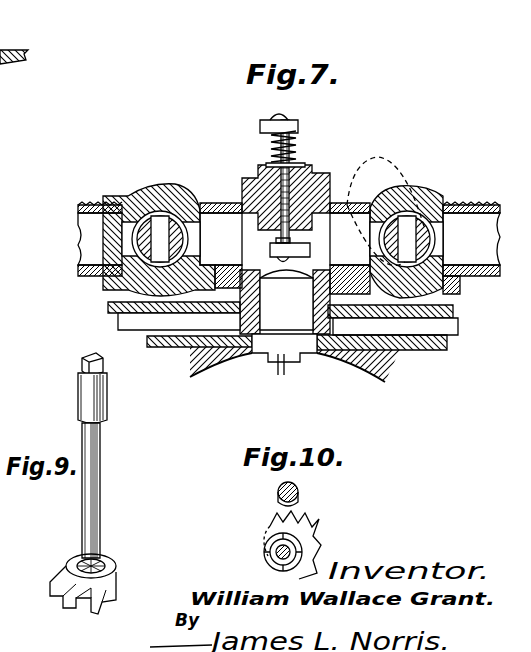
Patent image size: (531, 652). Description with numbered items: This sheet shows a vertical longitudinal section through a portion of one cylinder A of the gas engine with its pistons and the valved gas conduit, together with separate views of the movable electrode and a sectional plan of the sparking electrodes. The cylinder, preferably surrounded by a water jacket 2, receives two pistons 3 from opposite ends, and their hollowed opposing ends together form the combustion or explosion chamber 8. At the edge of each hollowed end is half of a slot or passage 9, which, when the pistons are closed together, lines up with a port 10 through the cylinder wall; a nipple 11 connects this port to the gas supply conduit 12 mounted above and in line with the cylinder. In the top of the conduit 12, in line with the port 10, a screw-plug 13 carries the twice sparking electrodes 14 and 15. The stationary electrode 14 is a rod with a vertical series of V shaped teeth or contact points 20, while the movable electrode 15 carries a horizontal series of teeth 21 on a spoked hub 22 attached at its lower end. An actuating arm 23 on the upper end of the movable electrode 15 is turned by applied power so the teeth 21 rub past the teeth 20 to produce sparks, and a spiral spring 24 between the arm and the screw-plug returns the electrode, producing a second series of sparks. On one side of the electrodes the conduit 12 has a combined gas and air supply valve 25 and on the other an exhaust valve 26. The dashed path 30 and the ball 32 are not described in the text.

In FIG. 7, the water jacket 2 is at (393, 321).
In FIG. 7, the pistons 3 is at (297, 361).
In FIG. 7, the combustion or explosion chamber 8 is at (295, 373).
In FIG. 7, the slot or passage 9 is at (276, 360).
In FIG. 7, the port 10 is at (284, 348).
In FIG. 7, the nipple 11 is at (286, 300).
In FIG. 7, the gas supply conduit 12 is at (289, 248).
In FIG. 7, the screw-plug 13 is at (258, 178).
In FIG. 10, the stationary electrode 14 is at (278, 491).
In FIG. 7, the movable electrode 15 is at (300, 168).
In FIG. 9, the movable electrode 15 is at (99, 497).
In FIG. 10, the movable electrode 15 is at (265, 549).
In FIG. 10, the V shaped teeth or contact points 20 is at (299, 503).
In FIG. 7, the teeth or contact points 21 is at (311, 251).
In FIG. 9, the teeth or contact points 21 is at (60, 600).
In FIG. 10, the teeth or contact points 21 is at (310, 537).
In FIG. 9, the spoked hub 22 is at (113, 567).
In FIG. 10, the spoked hub 22 is at (267, 560).
In FIG. 7, the actuating arm 23 is at (271, 120).
In FIG. 7, the spiral spring 24 is at (294, 148).
In FIG. 7, the combined gas and air supply valve 25 is at (410, 196).
In FIG. 7, the exhaust valve 26 is at (135, 196).
In FIG. 7, the swing path 30 is at (376, 178).
In FIG. 7, the ball 32 is at (168, 180).
In FIG. 7, the cylinder A is at (174, 318).